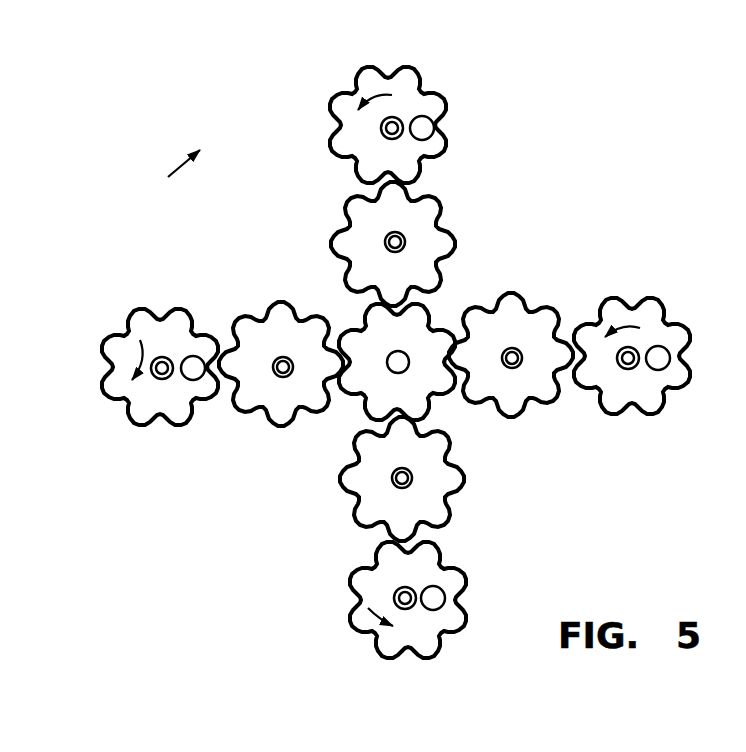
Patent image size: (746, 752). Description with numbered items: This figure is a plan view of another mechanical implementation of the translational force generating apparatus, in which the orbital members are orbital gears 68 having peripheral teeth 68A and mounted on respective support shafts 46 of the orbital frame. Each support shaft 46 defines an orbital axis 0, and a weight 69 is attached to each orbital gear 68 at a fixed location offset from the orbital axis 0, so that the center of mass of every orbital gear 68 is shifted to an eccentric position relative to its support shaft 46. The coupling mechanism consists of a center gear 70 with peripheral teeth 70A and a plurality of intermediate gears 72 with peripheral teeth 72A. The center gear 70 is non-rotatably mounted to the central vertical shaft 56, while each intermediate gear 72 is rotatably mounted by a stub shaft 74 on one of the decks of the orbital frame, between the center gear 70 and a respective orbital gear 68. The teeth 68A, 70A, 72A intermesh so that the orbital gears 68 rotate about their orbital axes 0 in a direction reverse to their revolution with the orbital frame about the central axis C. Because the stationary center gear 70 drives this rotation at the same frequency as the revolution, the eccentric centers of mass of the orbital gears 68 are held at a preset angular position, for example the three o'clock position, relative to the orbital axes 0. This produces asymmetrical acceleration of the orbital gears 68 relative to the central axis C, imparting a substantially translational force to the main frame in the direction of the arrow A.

The orbital gear 68 is at (377, 62).
The peripheral teeth of orbital gear 68A is at (415, 80).
The weight 69 is at (434, 128).
The orbital axis 0 is at (382, 128).
The support shaft 46 is at (398, 139).
The intermediate gear 72 is at (418, 196).
The peripheral teeth of intermediate gear 72A is at (355, 206).
The stub shaft 74 is at (387, 238).
The center gear 70 is at (433, 310).
The peripheral teeth of center gear 70A is at (378, 410).
The central vertical shaft 56 is at (404, 353).
The central axis C is at (393, 369).
The arrow indicating direction of translational force A is at (588, 254).